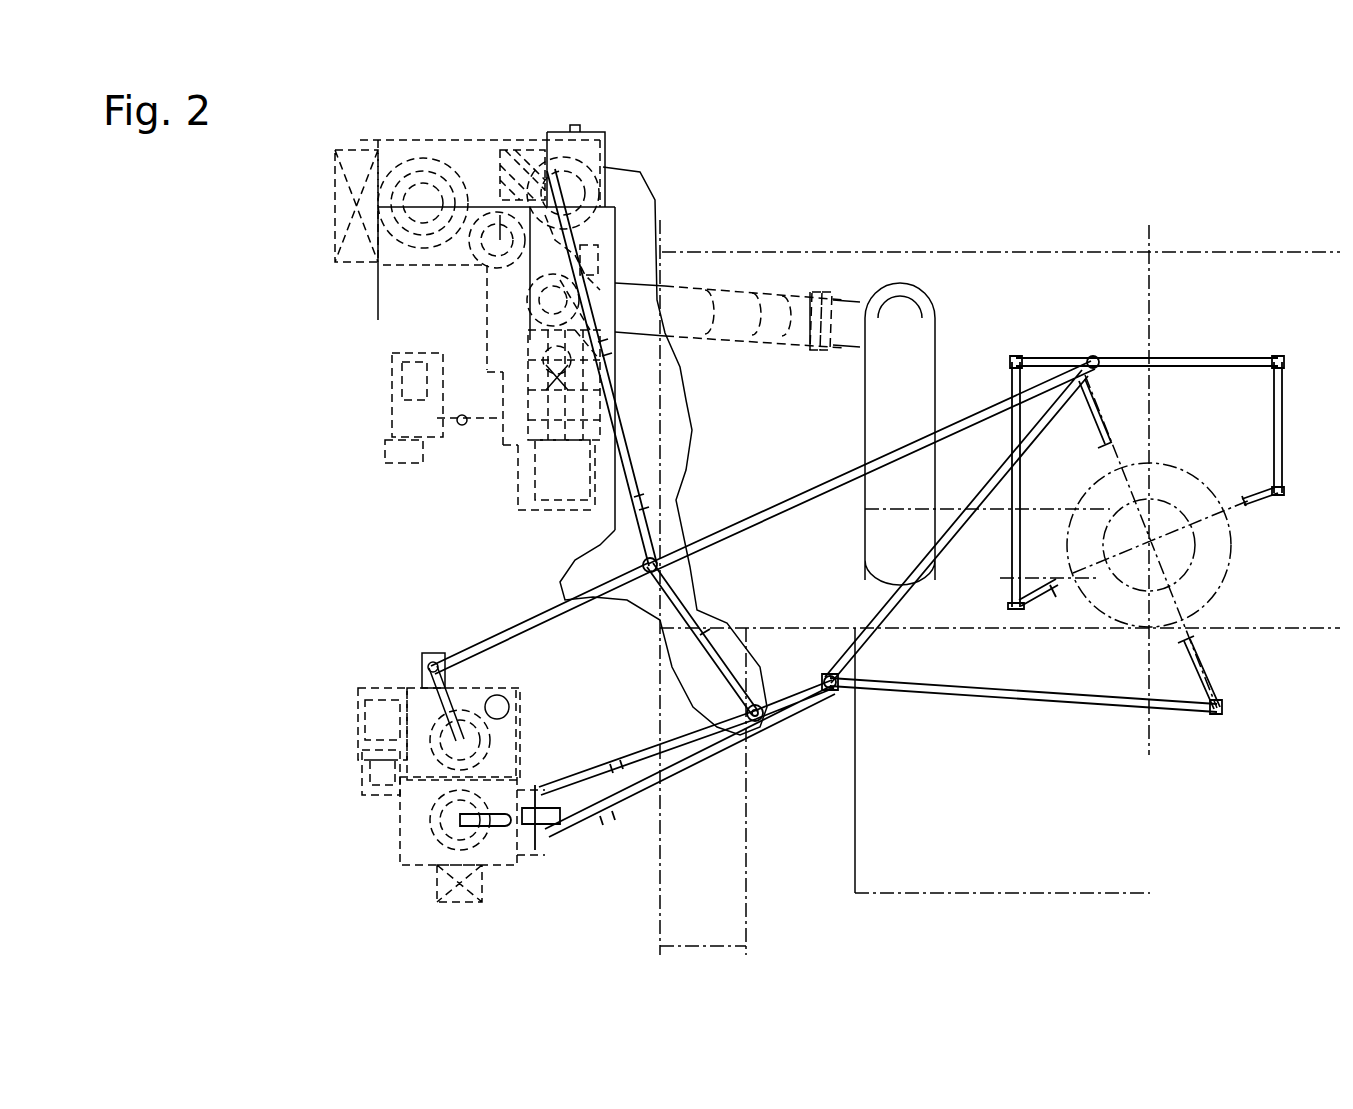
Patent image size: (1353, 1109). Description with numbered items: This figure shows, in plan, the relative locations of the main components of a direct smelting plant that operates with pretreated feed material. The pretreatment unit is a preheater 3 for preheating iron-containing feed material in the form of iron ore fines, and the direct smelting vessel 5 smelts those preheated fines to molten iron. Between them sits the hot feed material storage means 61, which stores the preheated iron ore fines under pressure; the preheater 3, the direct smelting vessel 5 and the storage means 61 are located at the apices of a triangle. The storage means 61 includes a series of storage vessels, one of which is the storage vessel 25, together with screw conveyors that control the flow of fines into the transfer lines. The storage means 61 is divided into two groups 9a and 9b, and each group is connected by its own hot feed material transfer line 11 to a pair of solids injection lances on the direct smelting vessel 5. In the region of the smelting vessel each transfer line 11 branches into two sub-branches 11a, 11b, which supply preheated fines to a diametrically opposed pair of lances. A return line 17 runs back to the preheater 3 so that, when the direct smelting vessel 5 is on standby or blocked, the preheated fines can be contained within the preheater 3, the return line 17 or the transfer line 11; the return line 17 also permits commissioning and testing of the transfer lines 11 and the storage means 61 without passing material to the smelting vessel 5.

The preheater 3 is at (560, 173).
The direct smelting vessel 5 is at (1210, 500).
The group of storage means 9a is at (428, 625).
The group of storage means 9b is at (495, 868).
The hot feed material transfer line 11 is at (553, 604).
The sub-branch 11a is at (1016, 362).
The sub-branch 11b is at (1227, 358).
The return line 17 is at (628, 432).
The storage vessel 25 is at (427, 745).
The hot feed material storage means 61 is at (372, 650).